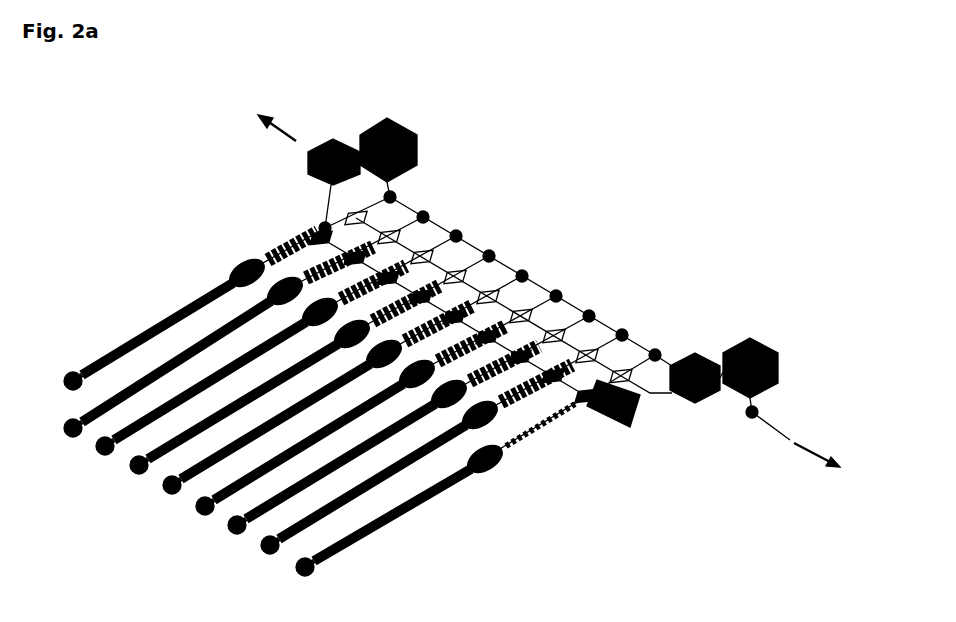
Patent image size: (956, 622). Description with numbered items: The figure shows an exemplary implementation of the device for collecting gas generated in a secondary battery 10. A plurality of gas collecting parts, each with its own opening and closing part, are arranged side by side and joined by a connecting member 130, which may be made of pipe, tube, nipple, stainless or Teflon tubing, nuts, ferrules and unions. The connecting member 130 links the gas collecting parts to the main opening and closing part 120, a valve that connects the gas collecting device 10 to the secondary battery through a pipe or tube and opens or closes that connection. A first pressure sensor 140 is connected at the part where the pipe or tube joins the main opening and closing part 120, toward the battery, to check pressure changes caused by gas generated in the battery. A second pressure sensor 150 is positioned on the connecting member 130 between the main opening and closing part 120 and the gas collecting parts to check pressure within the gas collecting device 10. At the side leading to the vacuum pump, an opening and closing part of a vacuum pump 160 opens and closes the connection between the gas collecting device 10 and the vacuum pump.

The device for collecting gas generated in a secondary battery 10 is at (681, 121).
The main opening and closing part 120 is at (672, 355).
The connecting member 130 is at (528, 270).
The first pressure sensor 140 is at (754, 356).
The second pressure sensor 150 is at (418, 140).
The opening and closing part of a vacuum pump 160 is at (338, 139).